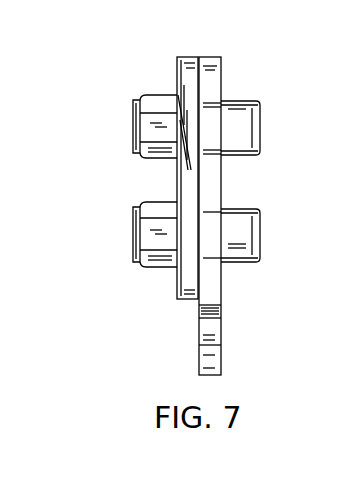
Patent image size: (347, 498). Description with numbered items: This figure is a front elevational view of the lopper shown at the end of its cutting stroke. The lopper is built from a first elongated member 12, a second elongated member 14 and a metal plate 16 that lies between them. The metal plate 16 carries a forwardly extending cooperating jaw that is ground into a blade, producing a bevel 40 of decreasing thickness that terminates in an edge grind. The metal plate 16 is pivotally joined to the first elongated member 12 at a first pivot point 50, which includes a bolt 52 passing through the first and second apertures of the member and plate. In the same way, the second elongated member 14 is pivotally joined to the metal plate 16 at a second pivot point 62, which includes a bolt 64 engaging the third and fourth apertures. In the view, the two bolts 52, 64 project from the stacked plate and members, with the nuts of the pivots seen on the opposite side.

The first elongated member 12 is at (222, 310).
The second elongated member 14 is at (176, 289).
The metal plate 16 is at (188, 57).
The bevel 40 is at (180, 167).
The first pivot point 50 is at (240, 82).
The bolt 52 is at (262, 139).
The second pivot point 62 is at (288, 215).
The bolt 64 is at (262, 250).